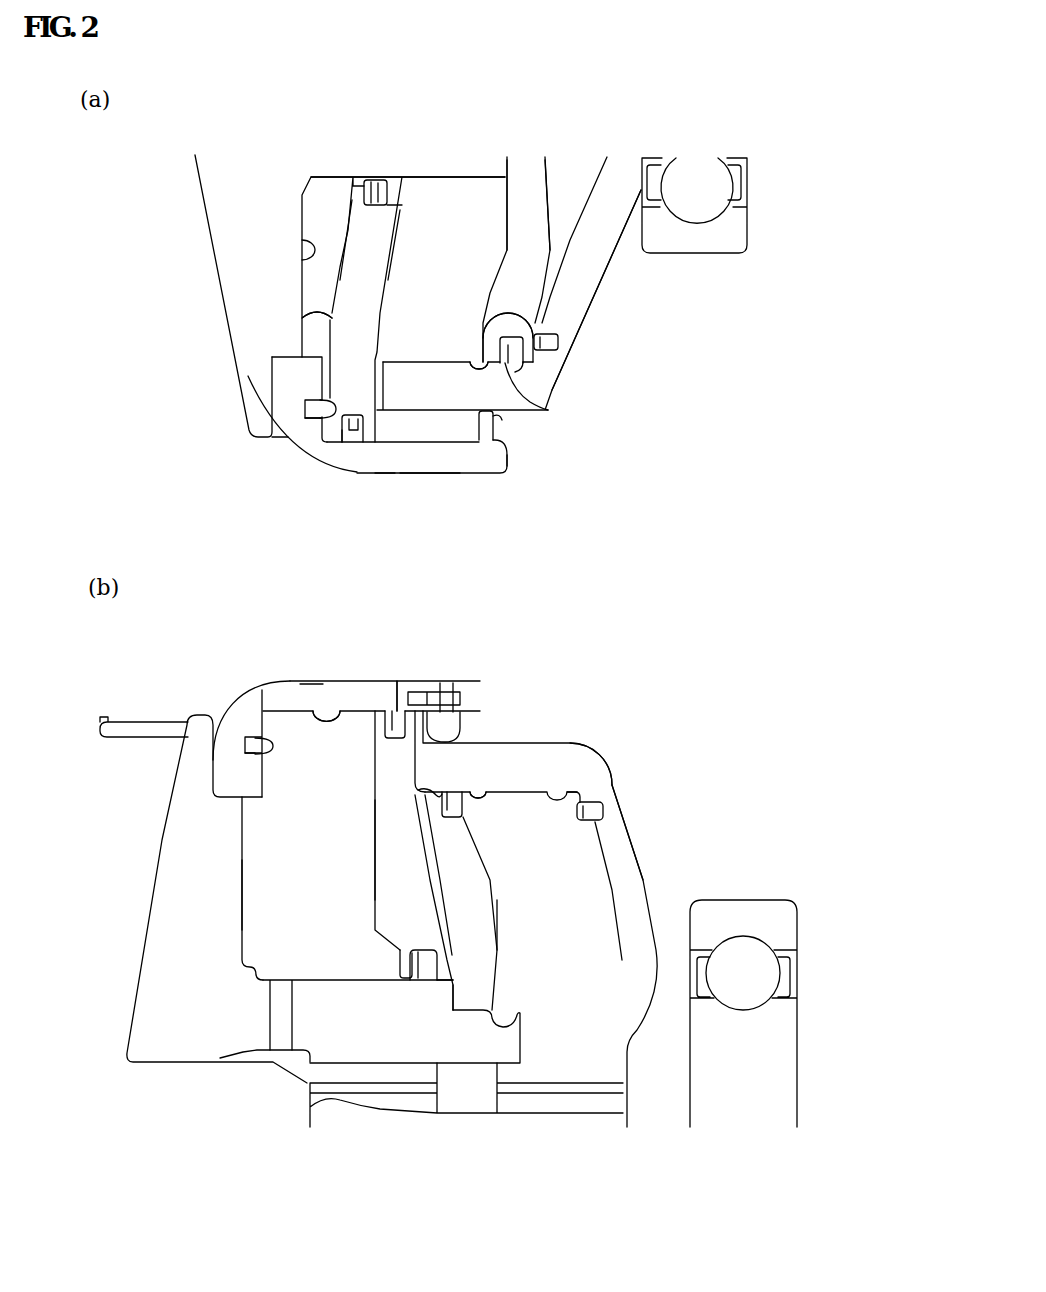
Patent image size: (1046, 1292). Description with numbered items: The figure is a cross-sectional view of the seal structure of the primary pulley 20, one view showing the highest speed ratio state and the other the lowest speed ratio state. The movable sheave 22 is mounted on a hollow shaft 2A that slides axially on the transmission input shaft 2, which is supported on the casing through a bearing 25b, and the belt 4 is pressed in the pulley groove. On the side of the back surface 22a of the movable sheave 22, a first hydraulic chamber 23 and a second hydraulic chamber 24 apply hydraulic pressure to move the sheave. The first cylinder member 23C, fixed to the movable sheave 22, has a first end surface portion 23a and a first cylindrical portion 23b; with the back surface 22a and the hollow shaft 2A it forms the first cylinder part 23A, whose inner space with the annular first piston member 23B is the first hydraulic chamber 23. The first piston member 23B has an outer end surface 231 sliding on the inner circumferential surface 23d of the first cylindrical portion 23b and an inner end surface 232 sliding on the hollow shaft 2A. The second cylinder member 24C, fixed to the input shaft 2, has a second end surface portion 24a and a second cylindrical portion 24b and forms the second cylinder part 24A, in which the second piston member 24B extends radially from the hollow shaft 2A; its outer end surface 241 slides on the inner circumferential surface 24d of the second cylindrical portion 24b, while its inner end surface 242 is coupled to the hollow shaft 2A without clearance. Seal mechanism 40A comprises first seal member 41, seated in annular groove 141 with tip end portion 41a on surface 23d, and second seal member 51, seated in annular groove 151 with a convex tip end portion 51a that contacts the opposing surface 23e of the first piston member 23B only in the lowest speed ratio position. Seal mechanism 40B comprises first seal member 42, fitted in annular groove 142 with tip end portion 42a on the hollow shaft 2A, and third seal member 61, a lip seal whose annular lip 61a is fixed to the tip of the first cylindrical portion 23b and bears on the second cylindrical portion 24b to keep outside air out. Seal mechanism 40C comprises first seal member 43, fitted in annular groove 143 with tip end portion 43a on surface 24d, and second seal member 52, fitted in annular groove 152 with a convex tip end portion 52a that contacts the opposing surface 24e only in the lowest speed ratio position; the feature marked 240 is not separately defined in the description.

The transmission input shaft 2 is at (573, 1120).
The hollow shaft 2A is at (475, 160).
The belt 4 is at (157, 717).
The primary pulley 20 is at (695, 378).
The movable sheave 22 is at (212, 213).
The back surface 22a is at (300, 240).
The first hydraulic chamber 23 is at (334, 225).
The first cylinder part 23A is at (320, 497).
The first piston member 23B is at (393, 240).
The first cylinder member 23C is at (422, 477).
The first end surface portion 23a is at (288, 383).
The first cylindrical portion 23b is at (483, 463).
The inner circumferential surface 23d is at (427, 460).
The opposing surface 23e is at (302, 317).
The second hydraulic chamber 24 is at (592, 182).
The second cylinder part 24A is at (622, 405).
The second piston member 24B is at (507, 207).
The second cylinder member 24C is at (627, 813).
The second end surface portion 24a is at (597, 260).
The second cylindrical portion 24b is at (403, 366).
The inner circumferential surface 24d is at (424, 358).
The opposing surface 24e is at (552, 207).
The bearing 25b is at (720, 182).
The seal mechanism 40A is at (317, 437).
The seal mechanism 40B is at (398, 123).
The seal mechanism 40C is at (545, 367).
The first seal member 41 is at (333, 440).
The tip end portion 41a is at (353, 473).
The first seal member 42 is at (403, 191).
The tip end portion 42a is at (373, 178).
The first seal member 43 is at (540, 370).
The tip end portion 43a is at (507, 363).
The second seal member 51 is at (312, 417).
The tip end portion 51a is at (310, 400).
The second seal member 52 is at (550, 333).
The tip of second protrusion 52a is at (493, 307).
The third seal member 61 is at (479, 424).
The annular lip 61a is at (502, 418).
The annular groove 141 is at (363, 424).
The annular groove 142 is at (388, 200).
The annular groove 143 is at (498, 345).
The annular groove 151 is at (305, 407).
The annular groove 152 is at (543, 340).
The outer circumferential end surface 231 is at (380, 473).
The inner circumferential end surface 232 is at (395, 177).
The engagement recess 240 is at (577, 348).
The outer circumferential end surface 241 is at (510, 357).
The inner circumferential end surface 242 is at (520, 1015).